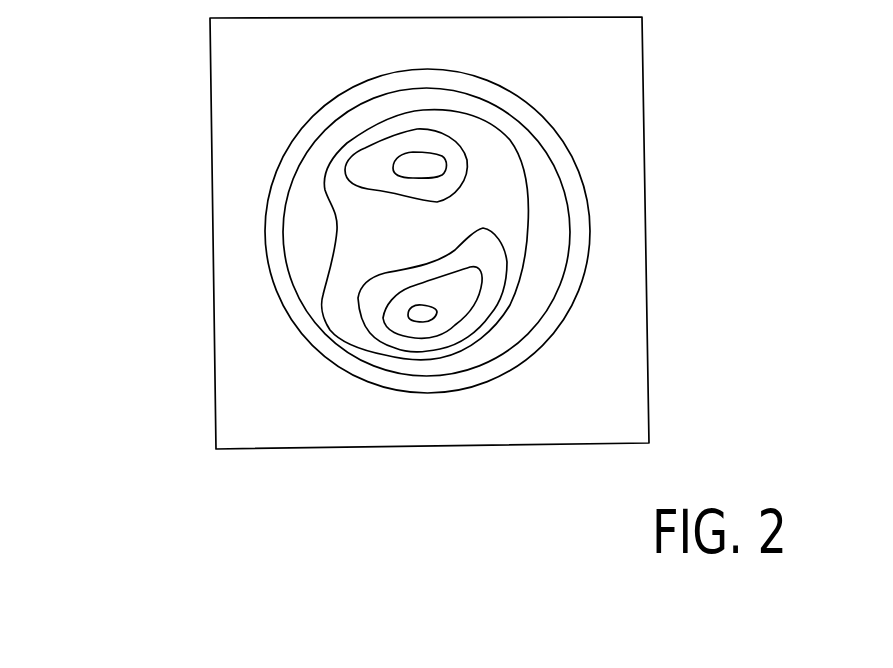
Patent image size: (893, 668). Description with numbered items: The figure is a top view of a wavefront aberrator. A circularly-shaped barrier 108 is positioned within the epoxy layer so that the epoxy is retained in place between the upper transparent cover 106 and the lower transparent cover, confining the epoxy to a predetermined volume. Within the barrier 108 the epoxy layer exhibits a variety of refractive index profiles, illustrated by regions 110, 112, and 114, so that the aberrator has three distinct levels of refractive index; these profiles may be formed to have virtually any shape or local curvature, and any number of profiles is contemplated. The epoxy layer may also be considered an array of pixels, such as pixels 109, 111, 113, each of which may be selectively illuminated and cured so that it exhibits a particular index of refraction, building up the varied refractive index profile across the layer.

The upper transparent cover 106 is at (615, 55).
The circularly-shaped barrier 108 is at (573, 192).
The pixel 109 is at (325, 198).
The region 110 is at (372, 245).
The pixel 111 is at (345, 150).
The region 112 is at (383, 296).
The pixel 113 is at (390, 147).
The region 114 is at (420, 318).